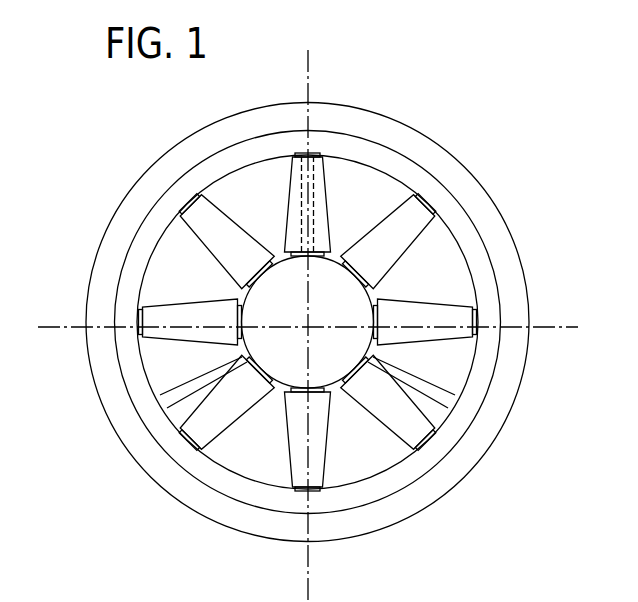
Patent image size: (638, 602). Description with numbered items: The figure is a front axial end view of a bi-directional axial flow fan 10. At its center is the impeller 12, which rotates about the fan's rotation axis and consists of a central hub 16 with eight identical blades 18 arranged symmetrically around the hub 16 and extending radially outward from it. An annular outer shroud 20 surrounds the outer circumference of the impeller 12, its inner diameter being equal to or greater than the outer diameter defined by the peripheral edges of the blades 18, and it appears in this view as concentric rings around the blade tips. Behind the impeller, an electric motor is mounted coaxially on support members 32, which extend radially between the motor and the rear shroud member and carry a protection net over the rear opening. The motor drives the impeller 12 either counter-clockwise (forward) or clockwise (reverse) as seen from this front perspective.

The axial flow fan 10 is at (455, 100).
The impeller 12 is at (370, 291).
The central hub 16 is at (352, 347).
The blades 18 is at (435, 302).
The outer shroud 20 is at (490, 188).
The support members 32 is at (163, 392).